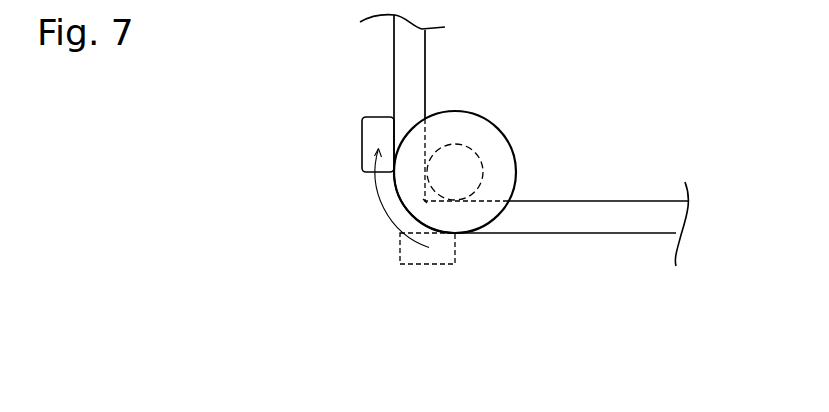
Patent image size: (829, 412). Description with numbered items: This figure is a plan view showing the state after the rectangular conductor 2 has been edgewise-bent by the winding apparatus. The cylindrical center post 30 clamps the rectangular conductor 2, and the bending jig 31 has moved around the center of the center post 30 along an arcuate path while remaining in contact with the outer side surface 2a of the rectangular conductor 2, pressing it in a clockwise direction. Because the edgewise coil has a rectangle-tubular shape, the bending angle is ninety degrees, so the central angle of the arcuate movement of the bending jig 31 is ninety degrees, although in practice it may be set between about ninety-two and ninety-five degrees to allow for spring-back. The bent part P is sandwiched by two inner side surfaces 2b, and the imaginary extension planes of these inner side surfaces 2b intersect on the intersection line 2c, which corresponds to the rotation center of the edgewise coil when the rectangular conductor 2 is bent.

The rectangular conductor 2 is at (515, 153).
The outer side surface 2a is at (393, 58).
The inner side surfaces 2b is at (430, 58).
The intersection line 2c is at (431, 206).
The center post 30 is at (474, 130).
The bending jig 31 is at (362, 131).
The bent part P is at (350, 235).